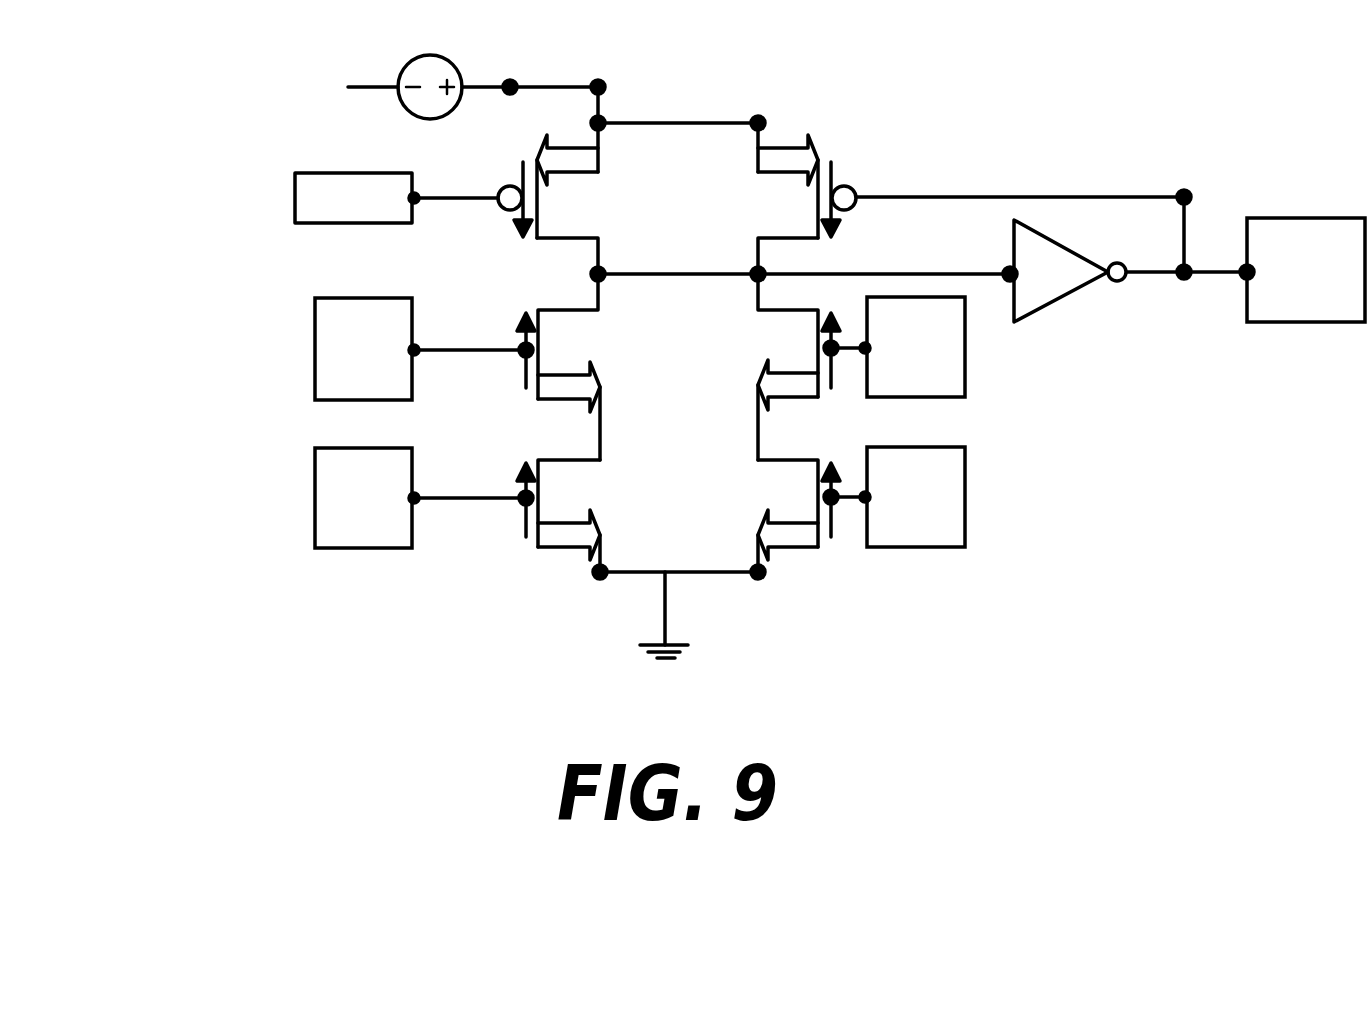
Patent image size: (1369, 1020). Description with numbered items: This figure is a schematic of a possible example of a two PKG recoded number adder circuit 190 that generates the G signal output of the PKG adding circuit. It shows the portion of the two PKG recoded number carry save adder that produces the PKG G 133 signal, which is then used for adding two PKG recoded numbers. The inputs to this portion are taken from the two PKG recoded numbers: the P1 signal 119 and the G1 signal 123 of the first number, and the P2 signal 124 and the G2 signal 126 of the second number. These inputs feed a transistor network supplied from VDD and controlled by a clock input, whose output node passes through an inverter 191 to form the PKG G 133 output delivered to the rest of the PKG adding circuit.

The clock gating circuit 190 is at (175, 224).
The inverter 191 is at (1073, 289).
The P1 signal 119 is at (391, 387).
The P2 PKG recoded number signal 124 is at (391, 536).
The G1 PKG recoded number signal 123 is at (945, 385).
The G2 PKG recoded number signal 126 is at (945, 535).
The PKG G signal 133 is at (1279, 309).